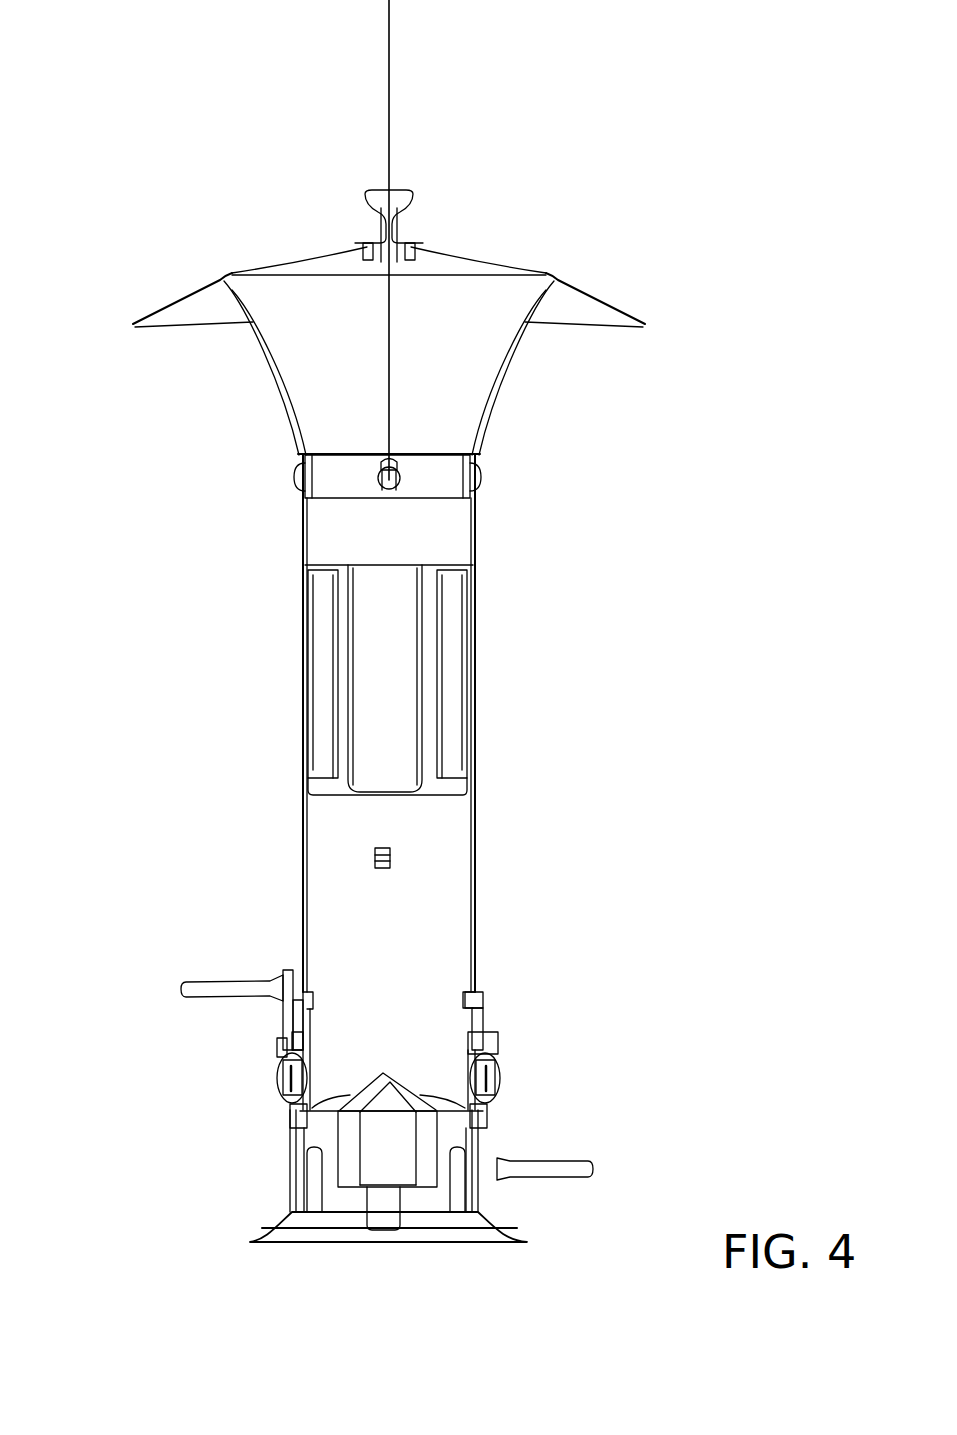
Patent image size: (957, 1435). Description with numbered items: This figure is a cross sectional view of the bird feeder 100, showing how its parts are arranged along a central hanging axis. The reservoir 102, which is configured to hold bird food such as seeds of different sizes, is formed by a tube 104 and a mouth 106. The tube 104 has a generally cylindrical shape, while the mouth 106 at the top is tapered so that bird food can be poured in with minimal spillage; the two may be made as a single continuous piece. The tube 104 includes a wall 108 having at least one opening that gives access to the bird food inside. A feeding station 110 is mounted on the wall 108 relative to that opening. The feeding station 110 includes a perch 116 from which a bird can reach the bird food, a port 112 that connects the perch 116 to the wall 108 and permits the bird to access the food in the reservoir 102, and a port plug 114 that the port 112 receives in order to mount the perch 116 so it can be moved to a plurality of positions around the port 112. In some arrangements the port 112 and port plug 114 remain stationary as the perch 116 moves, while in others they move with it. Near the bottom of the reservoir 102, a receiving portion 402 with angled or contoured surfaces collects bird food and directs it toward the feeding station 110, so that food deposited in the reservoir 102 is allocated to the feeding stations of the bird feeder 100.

The bird feeder 100 is at (129, 100).
The reservoir 102 is at (197, 527).
The tube 104 is at (566, 688).
The mouth 106 is at (566, 403).
The wall 108 is at (298, 819).
The feeding station 110 is at (164, 1040).
The port 112 is at (310, 1120).
The port plug 114 is at (277, 1080).
The perch 116 is at (213, 982).
The receiving portion 402 is at (378, 1082).